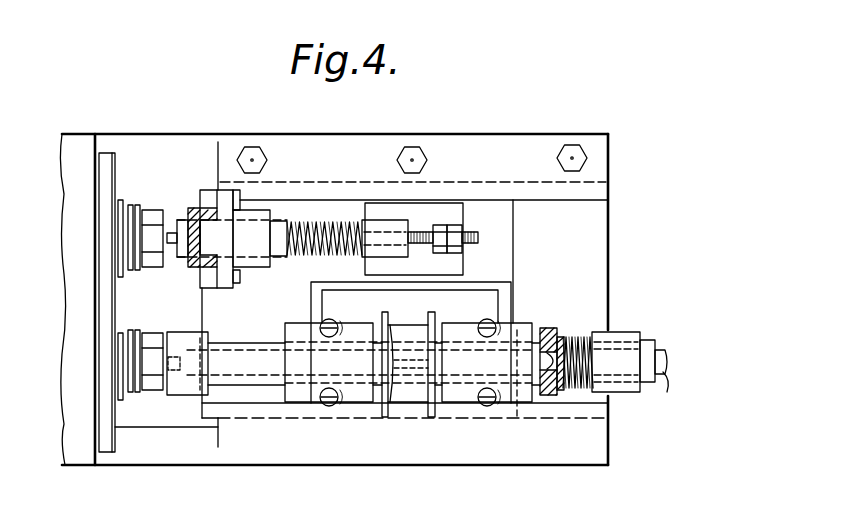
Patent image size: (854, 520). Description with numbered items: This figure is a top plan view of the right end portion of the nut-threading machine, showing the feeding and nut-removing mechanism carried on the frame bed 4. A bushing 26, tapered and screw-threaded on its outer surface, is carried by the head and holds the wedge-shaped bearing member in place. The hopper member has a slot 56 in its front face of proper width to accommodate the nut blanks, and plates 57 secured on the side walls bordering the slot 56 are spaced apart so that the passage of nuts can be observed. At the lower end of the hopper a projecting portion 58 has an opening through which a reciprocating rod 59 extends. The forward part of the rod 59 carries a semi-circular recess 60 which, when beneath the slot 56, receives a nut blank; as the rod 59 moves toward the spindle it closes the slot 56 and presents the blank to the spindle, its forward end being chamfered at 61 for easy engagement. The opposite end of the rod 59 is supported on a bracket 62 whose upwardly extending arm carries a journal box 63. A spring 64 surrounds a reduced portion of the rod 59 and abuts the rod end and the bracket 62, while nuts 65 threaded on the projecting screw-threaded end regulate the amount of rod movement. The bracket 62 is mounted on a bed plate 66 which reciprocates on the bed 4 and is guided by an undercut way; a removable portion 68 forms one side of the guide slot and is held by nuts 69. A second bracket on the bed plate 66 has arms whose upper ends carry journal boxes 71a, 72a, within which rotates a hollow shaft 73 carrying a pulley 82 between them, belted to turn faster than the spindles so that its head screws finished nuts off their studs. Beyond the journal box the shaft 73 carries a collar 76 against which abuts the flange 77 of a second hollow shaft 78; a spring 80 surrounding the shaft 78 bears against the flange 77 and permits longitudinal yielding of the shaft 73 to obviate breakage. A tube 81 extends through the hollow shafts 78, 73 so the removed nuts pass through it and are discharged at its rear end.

The bed 4 is at (610, 441).
The bushing 26 is at (118, 331).
The slot 56 is at (207, 250).
The plates 57 is at (214, 258).
The projecting portion 58 is at (247, 268).
The reciprocating rod 59 is at (278, 222).
The semi-circular recess 60 is at (184, 249).
The chamfer 61 is at (187, 262).
The bracket 62 is at (458, 212).
The journal box 63 is at (366, 253).
The spring 64 is at (320, 225).
The nuts 65 is at (462, 250).
The bed plate 66 is at (511, 248).
The removable portion 68 is at (488, 160).
The nuts 69 is at (578, 152).
The journal box 71a is at (348, 322).
The journal box 72a is at (464, 324).
The hollow shaft 73 is at (246, 346).
The collar 76 is at (547, 333).
The flange 77 is at (558, 344).
The second hollow shaft 78 is at (649, 342).
The spring 80 is at (583, 345).
The tube 81 is at (662, 390).
The pulley 82 is at (387, 318).